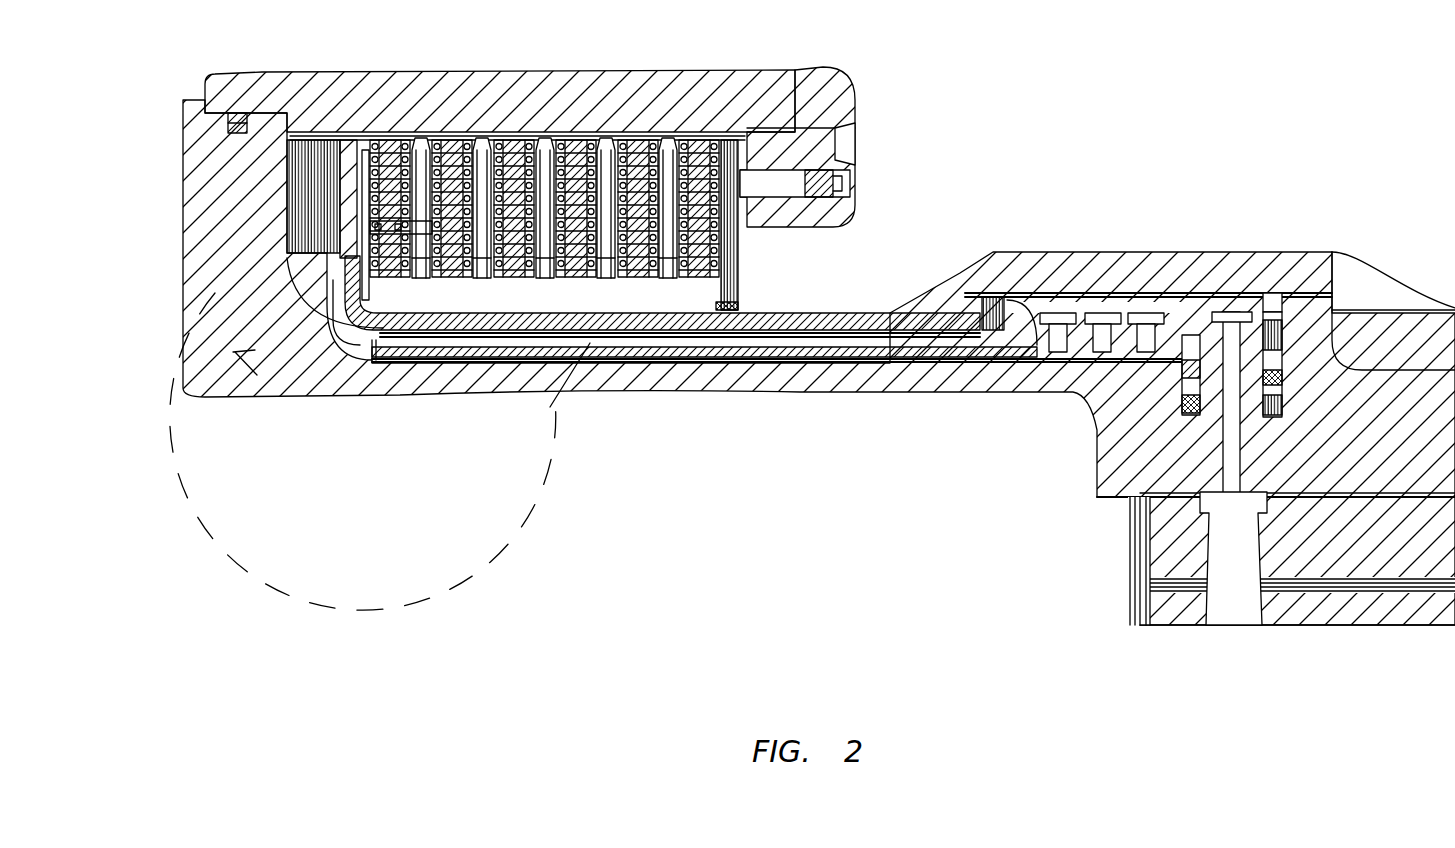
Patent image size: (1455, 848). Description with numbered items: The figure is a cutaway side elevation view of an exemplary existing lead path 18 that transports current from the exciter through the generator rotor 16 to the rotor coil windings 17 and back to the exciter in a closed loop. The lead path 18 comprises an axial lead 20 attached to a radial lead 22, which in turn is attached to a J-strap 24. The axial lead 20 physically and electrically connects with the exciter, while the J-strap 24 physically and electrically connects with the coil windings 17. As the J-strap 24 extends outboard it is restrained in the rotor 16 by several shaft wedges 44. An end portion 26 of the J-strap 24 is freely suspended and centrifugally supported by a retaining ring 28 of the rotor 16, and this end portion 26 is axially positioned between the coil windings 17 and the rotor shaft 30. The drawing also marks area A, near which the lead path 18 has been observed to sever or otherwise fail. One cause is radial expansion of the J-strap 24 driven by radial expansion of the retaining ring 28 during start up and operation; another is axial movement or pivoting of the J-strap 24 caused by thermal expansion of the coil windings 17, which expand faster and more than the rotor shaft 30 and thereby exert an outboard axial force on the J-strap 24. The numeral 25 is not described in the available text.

The generator rotor 16 is at (266, 172).
The rotor coil windings 17 is at (458, 143).
The conductive lead path 18 is at (771, 338).
The axial lead 20 is at (1337, 562).
The radial lead 22 is at (1210, 450).
The J-strap 24 is at (376, 340).
The plate 25 is at (343, 195).
The end portion 26 is at (335, 272).
The retaining ring 28 is at (413, 107).
The rotor shaft 30 is at (257, 353).
The shaft wedges 44 is at (395, 318).
The area A is at (535, 420).